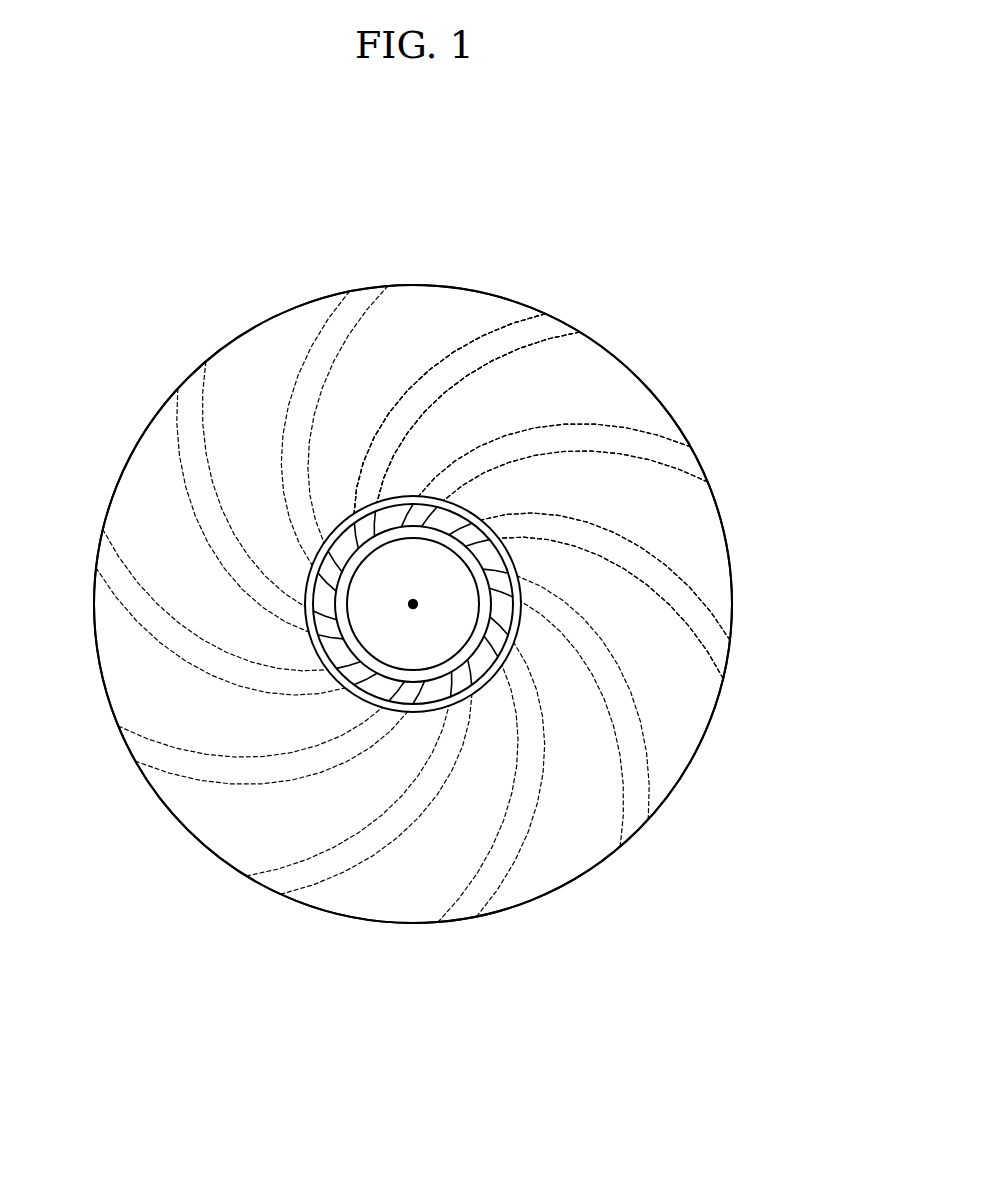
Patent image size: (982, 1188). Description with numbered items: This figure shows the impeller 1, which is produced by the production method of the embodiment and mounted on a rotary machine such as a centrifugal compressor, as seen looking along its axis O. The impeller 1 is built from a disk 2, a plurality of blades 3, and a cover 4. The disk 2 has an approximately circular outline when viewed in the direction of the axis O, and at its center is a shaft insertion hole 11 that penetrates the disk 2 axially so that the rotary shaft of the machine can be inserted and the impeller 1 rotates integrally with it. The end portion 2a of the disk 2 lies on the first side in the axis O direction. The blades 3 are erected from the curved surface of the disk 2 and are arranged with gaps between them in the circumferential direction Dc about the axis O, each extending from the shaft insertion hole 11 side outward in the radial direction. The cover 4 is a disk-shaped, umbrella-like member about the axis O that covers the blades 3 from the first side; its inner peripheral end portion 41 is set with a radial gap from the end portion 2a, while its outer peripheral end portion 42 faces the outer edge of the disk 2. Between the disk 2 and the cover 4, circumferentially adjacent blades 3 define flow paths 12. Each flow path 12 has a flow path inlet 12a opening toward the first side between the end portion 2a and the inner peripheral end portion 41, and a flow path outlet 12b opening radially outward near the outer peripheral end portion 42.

The impeller 1 is at (695, 330).
The disk 2 is at (483, 525).
The end portion 2a is at (390, 673).
The blades 3 is at (447, 352).
The cover 4 is at (695, 553).
The shaft insertion hole 11 is at (353, 580).
The flow paths 12 is at (460, 305).
The flow path inlet 12a is at (345, 512).
The flow path outlet 12b is at (508, 296).
The inner peripheral end portion 41 is at (520, 613).
The outer peripheral end portion 42 is at (718, 600).
The axis O is at (415, 605).
The circumferential direction Dc is at (187, 268).